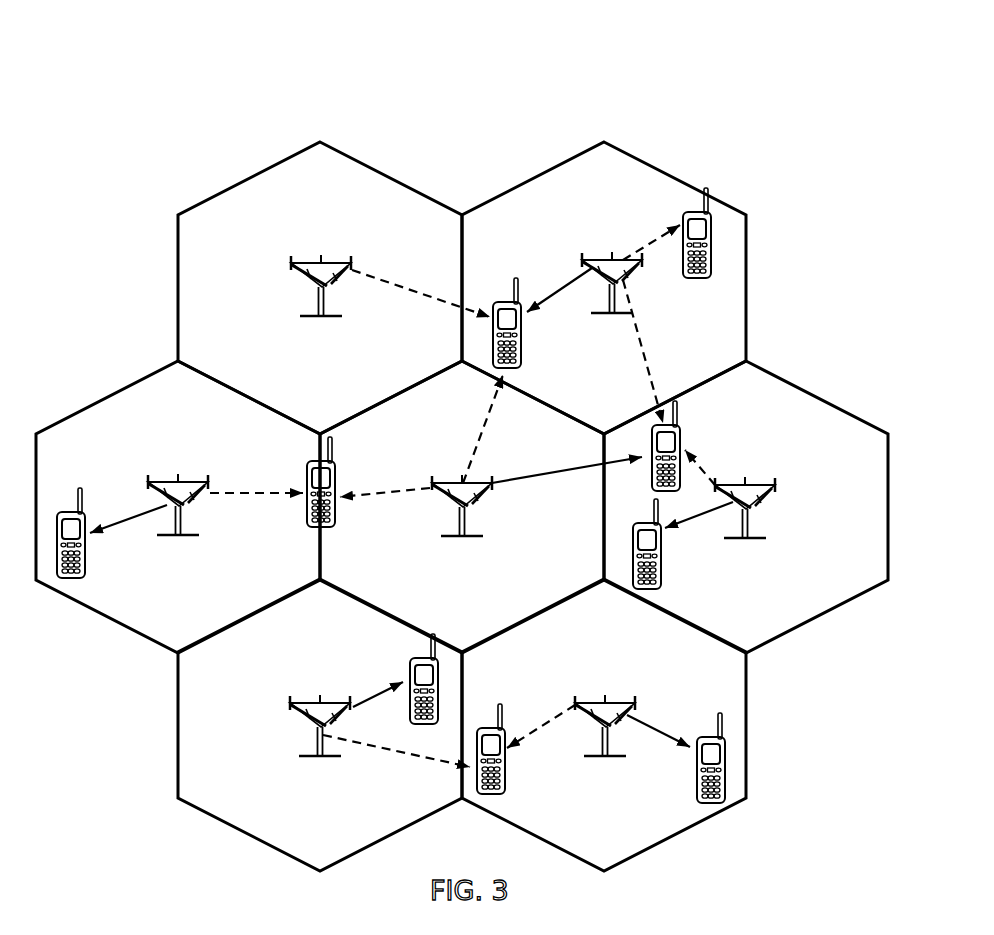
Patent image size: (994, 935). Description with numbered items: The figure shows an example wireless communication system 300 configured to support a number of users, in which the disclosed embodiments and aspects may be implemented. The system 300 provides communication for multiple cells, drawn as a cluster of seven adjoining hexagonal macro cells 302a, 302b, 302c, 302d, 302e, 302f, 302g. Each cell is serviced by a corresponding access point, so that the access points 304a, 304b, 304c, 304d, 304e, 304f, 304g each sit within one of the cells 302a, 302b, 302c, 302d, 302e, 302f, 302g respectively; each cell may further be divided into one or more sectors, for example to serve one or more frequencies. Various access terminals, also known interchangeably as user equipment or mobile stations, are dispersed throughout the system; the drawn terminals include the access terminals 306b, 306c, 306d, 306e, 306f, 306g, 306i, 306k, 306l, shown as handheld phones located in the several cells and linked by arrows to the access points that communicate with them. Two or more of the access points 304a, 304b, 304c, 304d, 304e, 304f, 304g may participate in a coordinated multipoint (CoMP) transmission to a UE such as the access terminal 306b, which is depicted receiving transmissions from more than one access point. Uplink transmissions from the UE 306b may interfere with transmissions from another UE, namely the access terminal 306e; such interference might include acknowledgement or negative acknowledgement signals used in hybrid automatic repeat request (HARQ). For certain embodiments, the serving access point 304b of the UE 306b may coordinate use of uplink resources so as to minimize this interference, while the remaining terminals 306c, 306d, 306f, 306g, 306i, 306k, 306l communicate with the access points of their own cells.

The wireless communication system 300 is at (757, 66).
The macro cell 302a is at (232, 189).
The macro cell 302b is at (697, 189).
The macro cell 302c is at (108, 396).
The macro cell 302d is at (458, 410).
The macro cell 302e is at (813, 393).
The macro cell 302f is at (213, 820).
The macro cell 302g is at (712, 822).
The access point 304a is at (322, 262).
The access point 304b is at (583, 258).
The access point 304c is at (180, 480).
The access point 304d is at (432, 483).
The access point 304e is at (775, 483).
The access point 304f is at (320, 701).
The access point 304g is at (604, 701).
The access terminal 306b is at (516, 292).
The access terminal 306c is at (84, 572).
The access terminal 306d is at (306, 528).
The access terminal 306e is at (680, 421).
The access terminal 306f is at (410, 662).
The access terminal 306g is at (504, 784).
The access terminal 306i is at (678, 219).
The access terminal 306k is at (662, 573).
The access terminal 306l is at (710, 733).